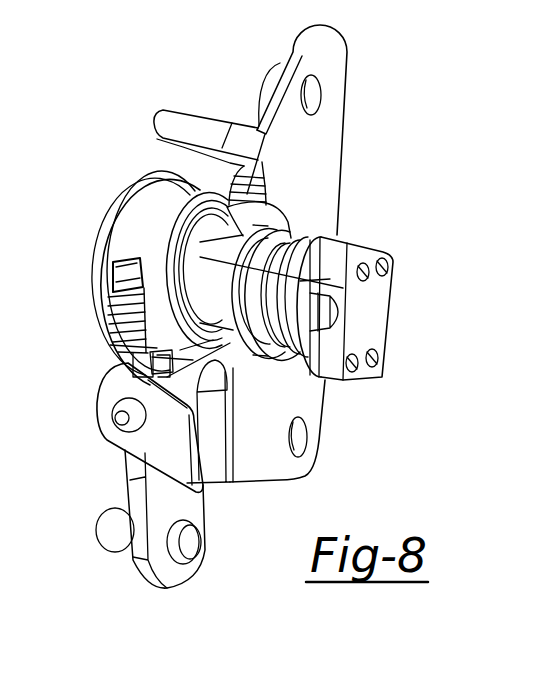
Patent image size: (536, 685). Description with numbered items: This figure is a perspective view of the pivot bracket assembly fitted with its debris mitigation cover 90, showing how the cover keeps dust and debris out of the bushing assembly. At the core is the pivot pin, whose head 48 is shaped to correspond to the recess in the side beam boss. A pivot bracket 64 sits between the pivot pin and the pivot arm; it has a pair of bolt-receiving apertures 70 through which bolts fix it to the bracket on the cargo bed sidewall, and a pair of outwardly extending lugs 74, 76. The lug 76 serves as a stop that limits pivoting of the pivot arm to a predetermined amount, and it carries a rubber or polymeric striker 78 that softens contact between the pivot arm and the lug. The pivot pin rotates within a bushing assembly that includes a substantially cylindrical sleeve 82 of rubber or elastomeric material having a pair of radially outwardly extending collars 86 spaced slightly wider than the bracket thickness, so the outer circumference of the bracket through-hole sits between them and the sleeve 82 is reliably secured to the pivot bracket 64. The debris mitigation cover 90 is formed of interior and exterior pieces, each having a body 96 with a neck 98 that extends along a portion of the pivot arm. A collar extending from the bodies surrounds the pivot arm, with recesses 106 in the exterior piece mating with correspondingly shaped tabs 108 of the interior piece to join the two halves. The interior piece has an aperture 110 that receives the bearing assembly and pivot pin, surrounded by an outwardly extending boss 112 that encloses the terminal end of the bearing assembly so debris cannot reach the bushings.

The head 48 is at (347, 258).
The pivot bracket 64 is at (348, 39).
The bolt-receiving apertures 70 is at (312, 96).
The lug 74 is at (202, 127).
The lug 76 is at (113, 383).
The striker 78 is at (122, 418).
The sleeve 82 is at (180, 313).
The collars 86 is at (262, 247).
The debris mitigation cover 90 is at (110, 336).
The body 96 is at (181, 229).
The neck 98 is at (138, 220).
The recesses 106 is at (118, 262).
The tabs 108 is at (117, 275).
The aperture 110 is at (198, 320).
The boss 112 is at (343, 288).